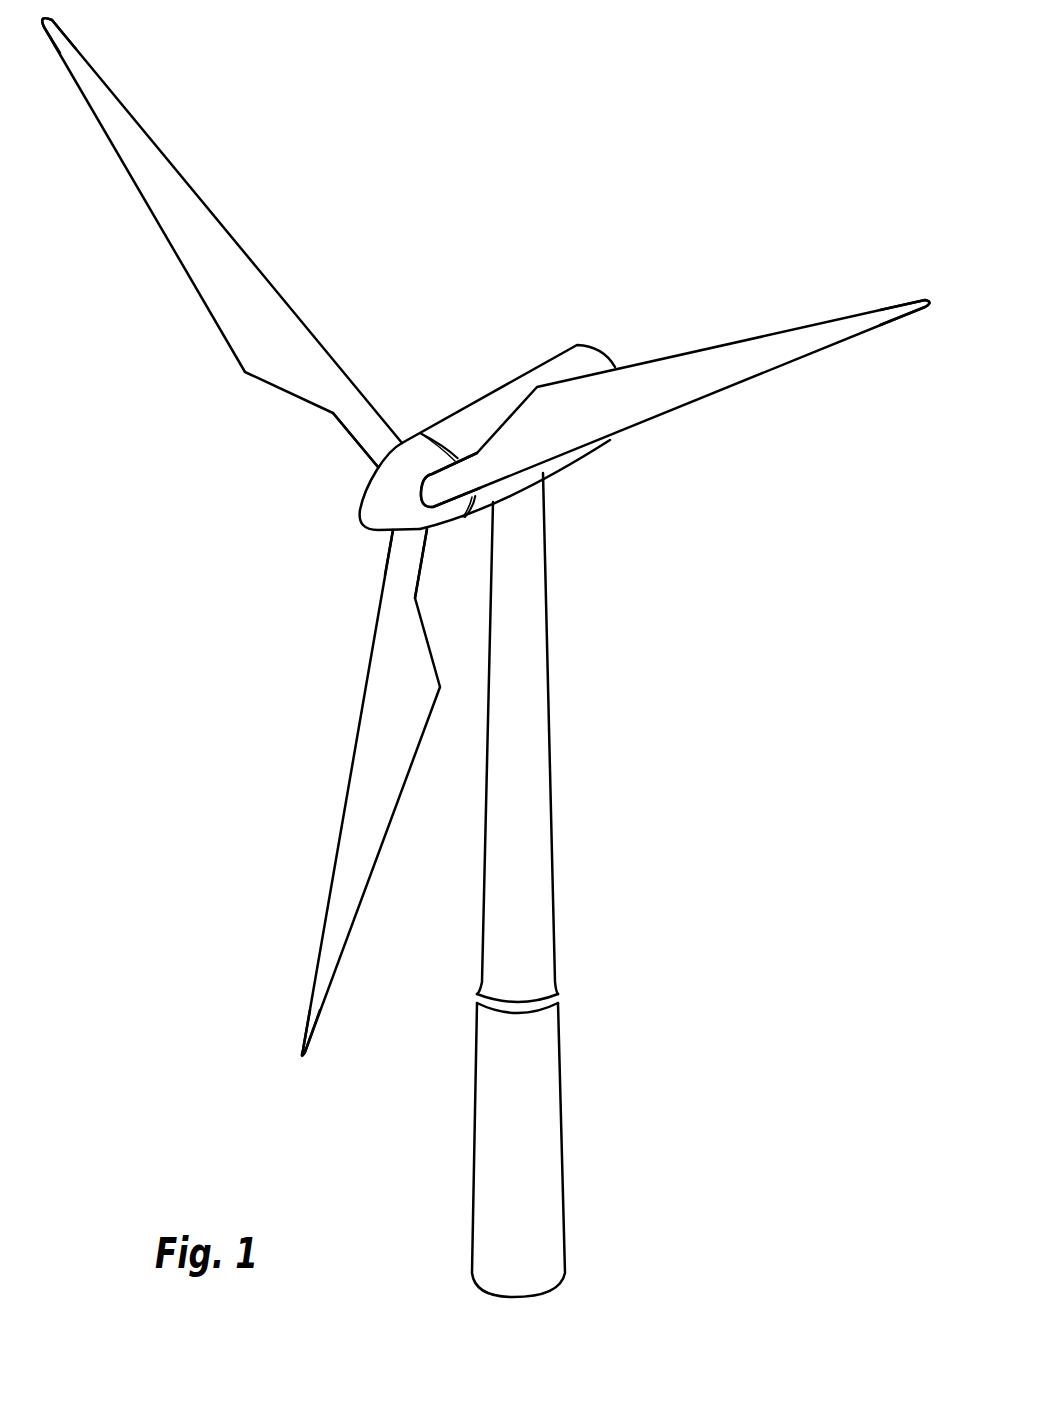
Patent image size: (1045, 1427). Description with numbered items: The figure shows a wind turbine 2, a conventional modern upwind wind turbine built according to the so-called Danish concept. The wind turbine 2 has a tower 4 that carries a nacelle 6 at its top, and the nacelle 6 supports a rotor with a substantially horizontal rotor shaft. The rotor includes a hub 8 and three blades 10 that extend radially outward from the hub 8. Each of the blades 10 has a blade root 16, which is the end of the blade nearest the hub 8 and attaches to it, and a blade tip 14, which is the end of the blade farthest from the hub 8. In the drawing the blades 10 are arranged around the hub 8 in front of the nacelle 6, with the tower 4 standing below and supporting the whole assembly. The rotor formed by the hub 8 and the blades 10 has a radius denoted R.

The wind turbine 2 is at (668, 817).
The tower 4 is at (538, 735).
The nacelle 6 is at (480, 413).
The hub 8 is at (378, 503).
The blade 10 is at (258, 343).
The blade tip 14 is at (90, 82).
The blade root 16 is at (387, 455).